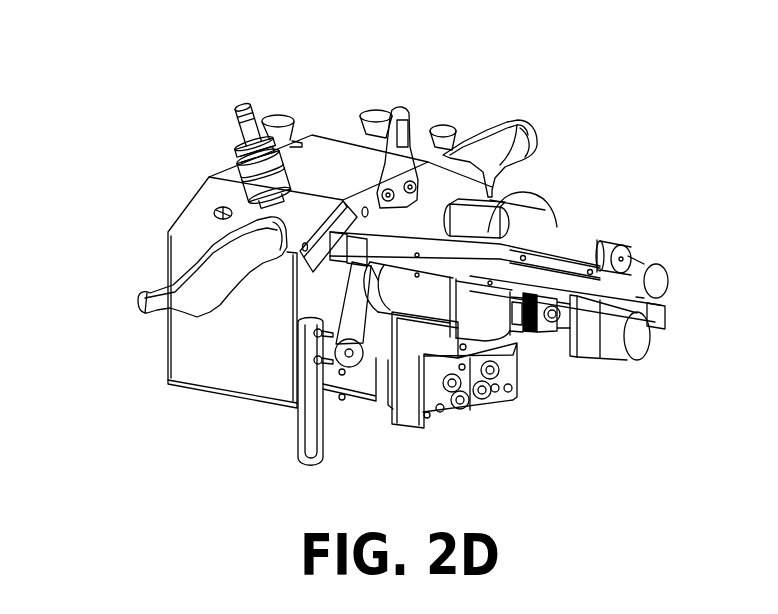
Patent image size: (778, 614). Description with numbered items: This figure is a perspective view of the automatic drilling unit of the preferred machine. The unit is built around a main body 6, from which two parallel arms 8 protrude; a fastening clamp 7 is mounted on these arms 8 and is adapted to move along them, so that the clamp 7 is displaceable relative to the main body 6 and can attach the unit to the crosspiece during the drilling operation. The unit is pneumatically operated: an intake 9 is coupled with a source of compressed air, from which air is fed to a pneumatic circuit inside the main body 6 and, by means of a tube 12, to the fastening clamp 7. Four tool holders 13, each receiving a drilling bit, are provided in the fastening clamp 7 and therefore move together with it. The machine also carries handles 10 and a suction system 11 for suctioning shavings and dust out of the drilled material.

The main body 6 is at (222, 365).
The fastening clamp 7 is at (423, 298).
The parallel arms 8 is at (473, 297).
The intake 9 is at (246, 130).
The handles 10 is at (198, 270).
The suction system 11 is at (527, 212).
The tube 12 is at (608, 302).
The tool holders 13 is at (490, 400).